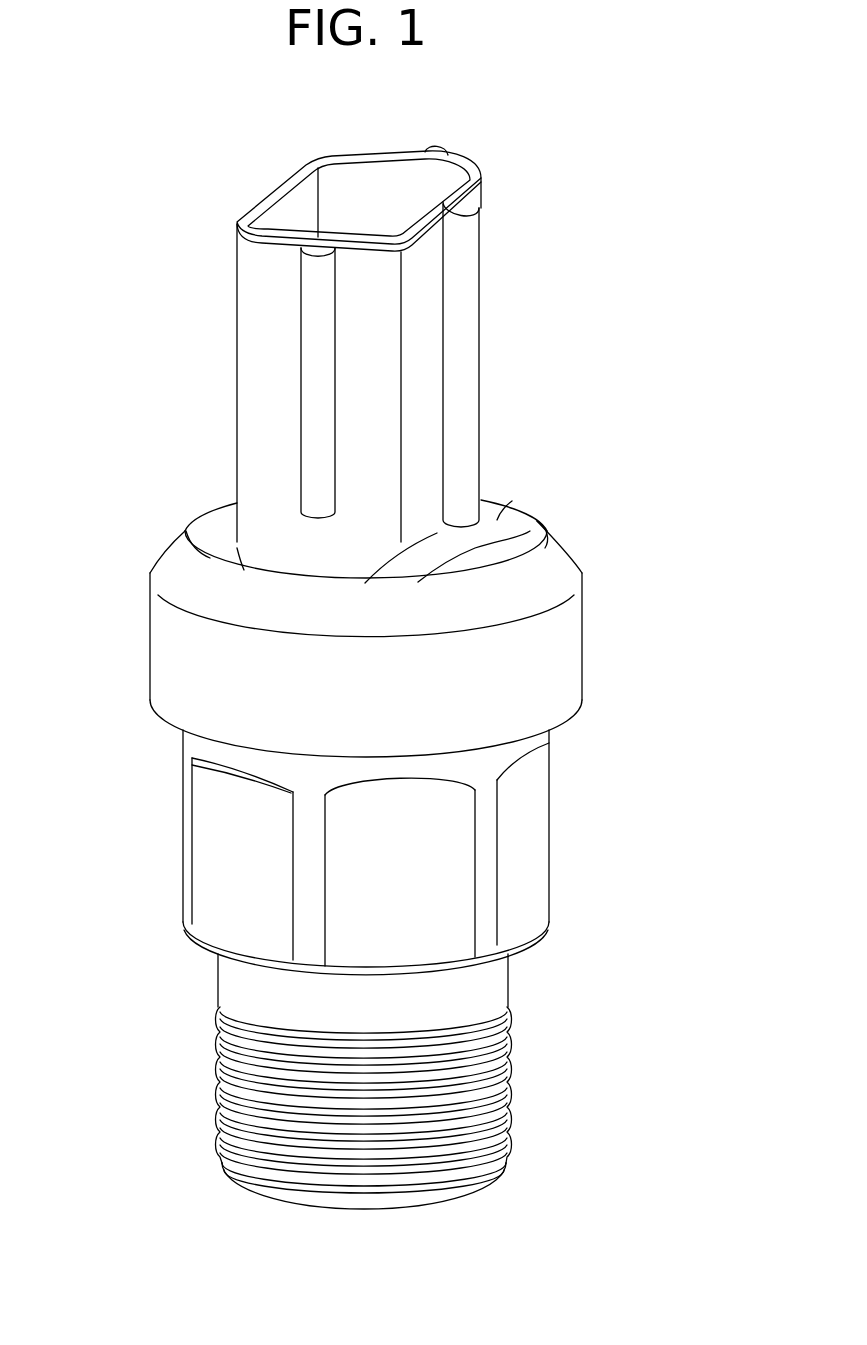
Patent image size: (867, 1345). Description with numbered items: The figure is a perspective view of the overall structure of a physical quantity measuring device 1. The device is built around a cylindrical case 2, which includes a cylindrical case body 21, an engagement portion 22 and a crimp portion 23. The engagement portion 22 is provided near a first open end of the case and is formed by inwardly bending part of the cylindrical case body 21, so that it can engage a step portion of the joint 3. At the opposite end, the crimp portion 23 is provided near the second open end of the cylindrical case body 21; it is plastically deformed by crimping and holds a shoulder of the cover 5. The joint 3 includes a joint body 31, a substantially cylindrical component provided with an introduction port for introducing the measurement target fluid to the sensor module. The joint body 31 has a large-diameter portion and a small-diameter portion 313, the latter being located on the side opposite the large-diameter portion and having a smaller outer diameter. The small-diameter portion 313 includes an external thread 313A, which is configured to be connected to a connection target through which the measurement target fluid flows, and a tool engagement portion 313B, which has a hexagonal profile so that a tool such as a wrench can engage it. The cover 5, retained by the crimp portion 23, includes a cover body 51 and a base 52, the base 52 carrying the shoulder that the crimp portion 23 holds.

The physical quantity measuring device 1 is at (540, 157).
The cylindrical case 2 is at (587, 657).
The cylindrical case body 21 is at (568, 627).
The engagement portion 22 is at (557, 731).
The crimp portion 23 is at (568, 548).
The joint 3 is at (553, 858).
The joint body 31 is at (170, 807).
The small-diameter portion 313 is at (687, 962).
The external thread 313A is at (493, 1035).
The tool engagement portion 313B is at (549, 918).
The cover 5 is at (520, 353).
The cover body 51 is at (430, 280).
The base 52 is at (496, 519).